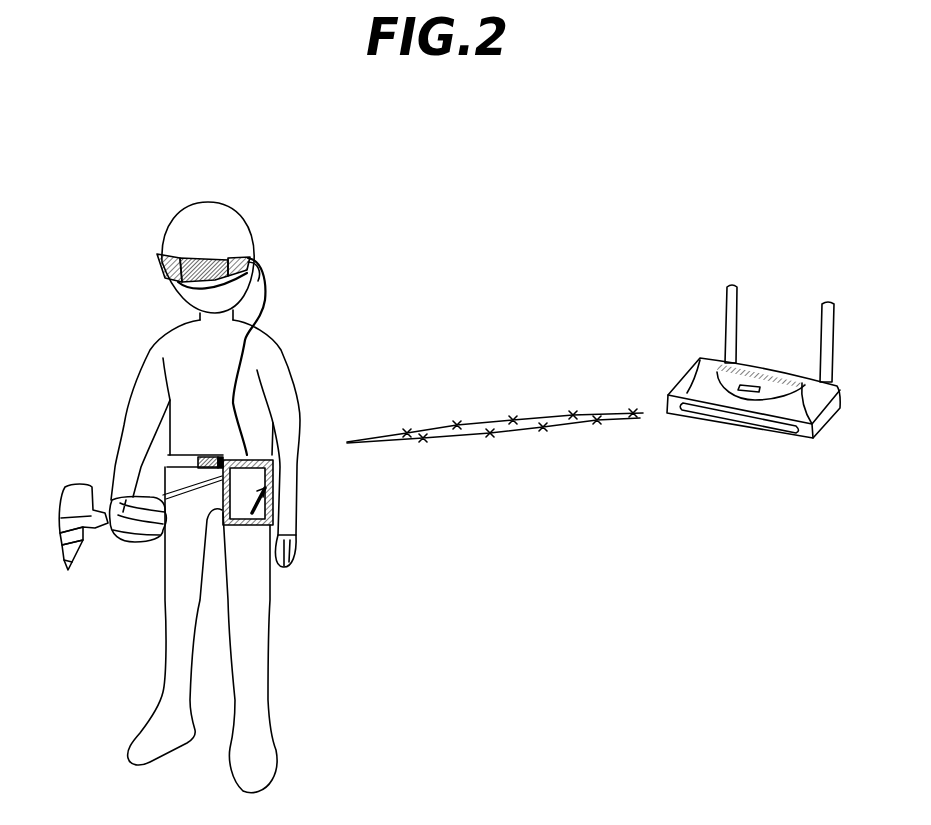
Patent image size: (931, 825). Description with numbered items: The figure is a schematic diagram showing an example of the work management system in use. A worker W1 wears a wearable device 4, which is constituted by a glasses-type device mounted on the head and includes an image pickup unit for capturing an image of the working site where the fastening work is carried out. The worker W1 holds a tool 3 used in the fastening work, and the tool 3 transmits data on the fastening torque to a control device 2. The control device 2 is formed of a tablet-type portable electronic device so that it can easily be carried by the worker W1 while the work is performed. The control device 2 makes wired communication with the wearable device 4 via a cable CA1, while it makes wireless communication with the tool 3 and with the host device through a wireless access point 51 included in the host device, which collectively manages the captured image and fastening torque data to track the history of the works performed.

The worker W1 is at (232, 229).
The wearable device 4 is at (158, 265).
The cable CA1 is at (268, 292).
The control device 2 is at (250, 492).
The tool 3 is at (62, 500).
The wireless access point 51 is at (785, 405).